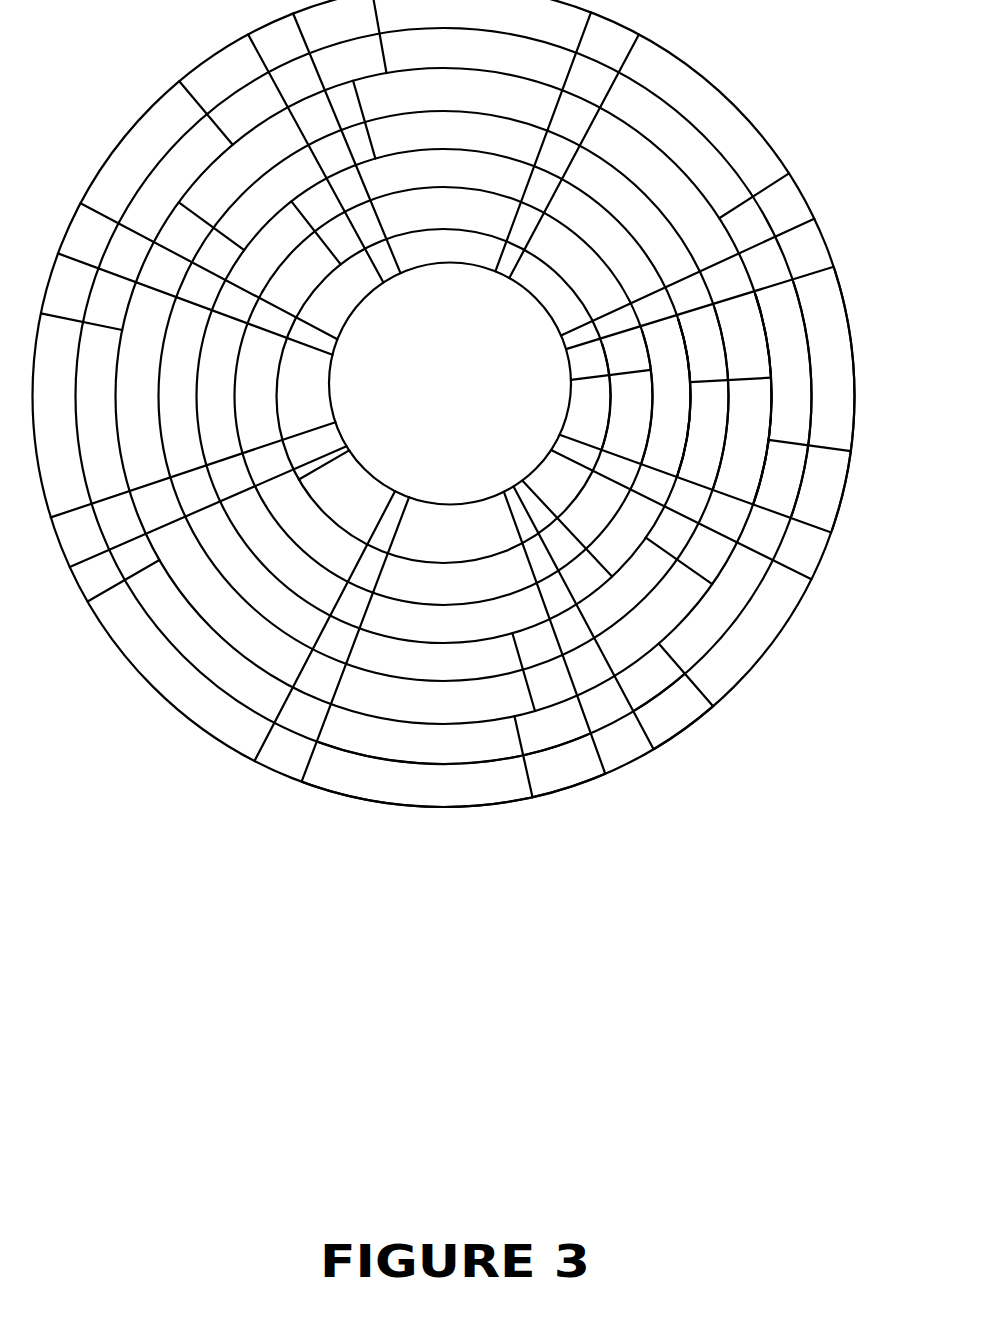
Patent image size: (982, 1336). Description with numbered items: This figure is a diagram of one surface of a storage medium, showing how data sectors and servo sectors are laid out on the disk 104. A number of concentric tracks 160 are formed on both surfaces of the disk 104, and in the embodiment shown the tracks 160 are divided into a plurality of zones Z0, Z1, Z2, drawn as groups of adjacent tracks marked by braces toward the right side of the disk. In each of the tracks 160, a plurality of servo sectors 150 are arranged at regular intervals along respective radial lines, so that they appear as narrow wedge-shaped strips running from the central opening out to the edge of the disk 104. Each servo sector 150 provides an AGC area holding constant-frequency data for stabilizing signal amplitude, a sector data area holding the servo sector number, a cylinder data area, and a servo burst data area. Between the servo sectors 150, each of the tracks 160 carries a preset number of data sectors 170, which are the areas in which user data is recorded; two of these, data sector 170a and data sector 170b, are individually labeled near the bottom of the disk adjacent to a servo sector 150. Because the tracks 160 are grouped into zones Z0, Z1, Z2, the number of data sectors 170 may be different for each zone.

The disk 104 is at (80, 675).
The servo sectors 150 is at (309, 68).
The concentric tracks 160 is at (181, 717).
The data sectors 170 is at (434, 796).
The data sector 170a is at (600, 779).
The data sector 170b is at (714, 726).
The zone Z0 is at (852, 412).
The zone Z1 is at (765, 447).
The zone Z2 is at (686, 447).